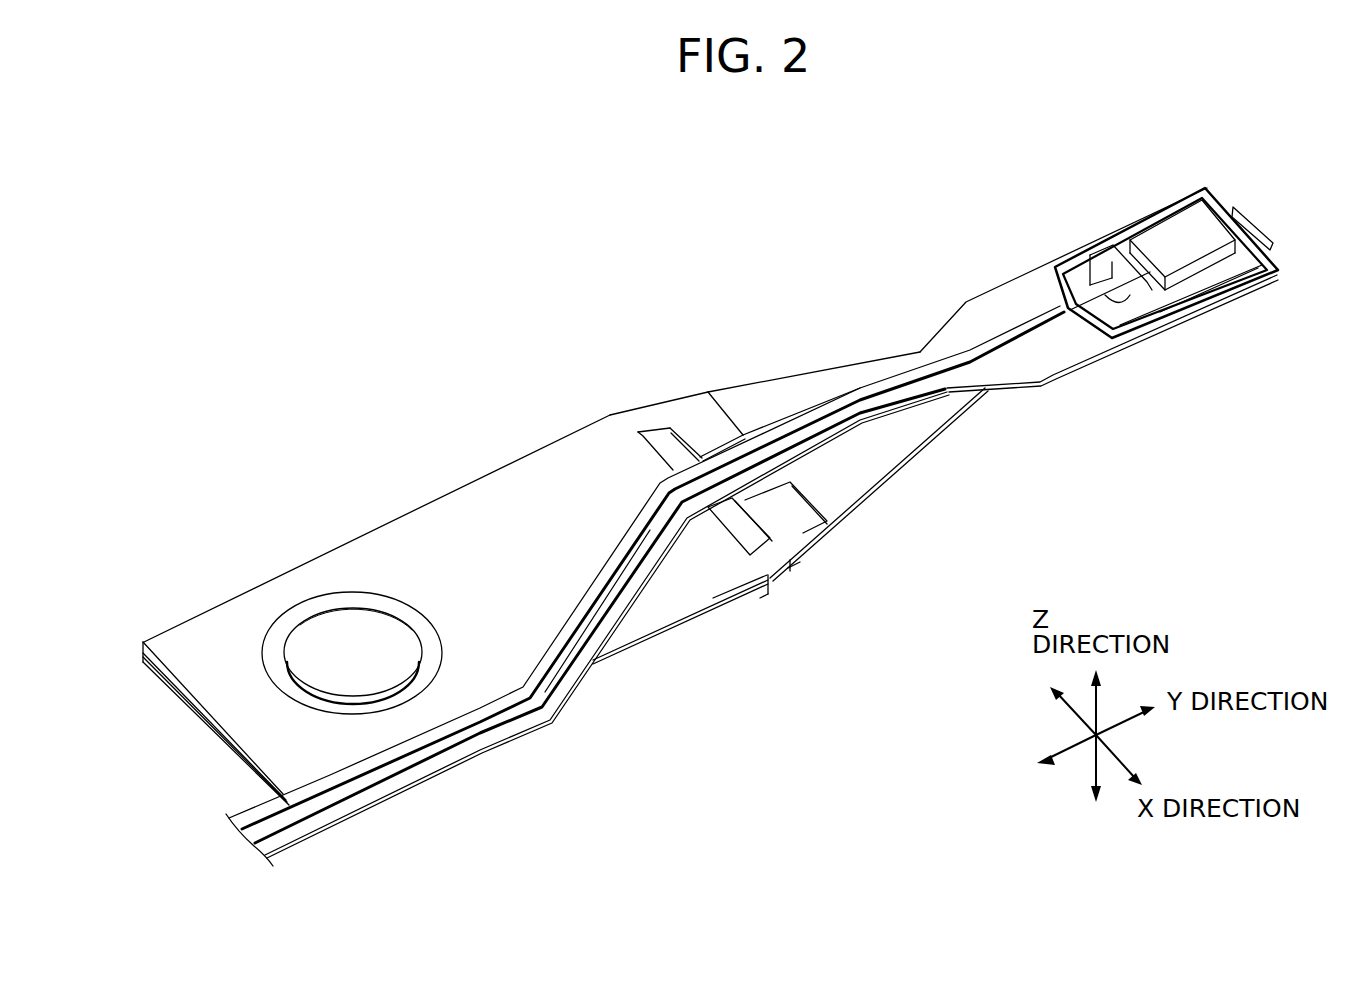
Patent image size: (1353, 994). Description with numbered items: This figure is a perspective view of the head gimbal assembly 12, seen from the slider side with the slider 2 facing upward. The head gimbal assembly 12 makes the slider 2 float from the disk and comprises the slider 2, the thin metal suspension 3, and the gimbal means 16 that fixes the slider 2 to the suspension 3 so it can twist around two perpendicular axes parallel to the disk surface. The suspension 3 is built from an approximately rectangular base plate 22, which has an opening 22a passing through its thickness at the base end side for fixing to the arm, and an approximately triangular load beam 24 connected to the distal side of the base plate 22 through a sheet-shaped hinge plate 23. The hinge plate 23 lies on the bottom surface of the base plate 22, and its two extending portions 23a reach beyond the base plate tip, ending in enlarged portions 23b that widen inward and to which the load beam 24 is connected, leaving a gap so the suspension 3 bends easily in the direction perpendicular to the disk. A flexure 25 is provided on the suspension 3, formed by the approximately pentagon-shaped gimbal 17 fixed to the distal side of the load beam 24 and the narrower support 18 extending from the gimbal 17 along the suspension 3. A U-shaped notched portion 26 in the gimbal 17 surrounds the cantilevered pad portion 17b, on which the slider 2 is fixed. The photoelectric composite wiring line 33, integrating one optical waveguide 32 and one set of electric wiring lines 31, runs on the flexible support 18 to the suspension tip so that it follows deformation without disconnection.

The slider 2 is at (1172, 226).
The suspension 3 is at (387, 395).
The head gimbal assembly 12 is at (483, 293).
The gimbal means 16 is at (988, 309).
The gimbal 17 is at (1070, 273).
The pad portion 17b is at (1241, 287).
The support 18 is at (604, 569).
The base plate 22 is at (606, 662).
The opening 22a is at (341, 623).
The hinge plate 23 is at (670, 593).
The extending portion 23a is at (786, 534).
The enlarged portion 23b is at (797, 504).
The load beam 24 is at (877, 453).
The flexure 25 is at (794, 410).
The notched portion 26 is at (1107, 255).
The electric wiring lines 31 is at (1204, 294).
The optical waveguide 32 is at (1100, 300).
The photoelectric composite wiring line 33 is at (315, 805).